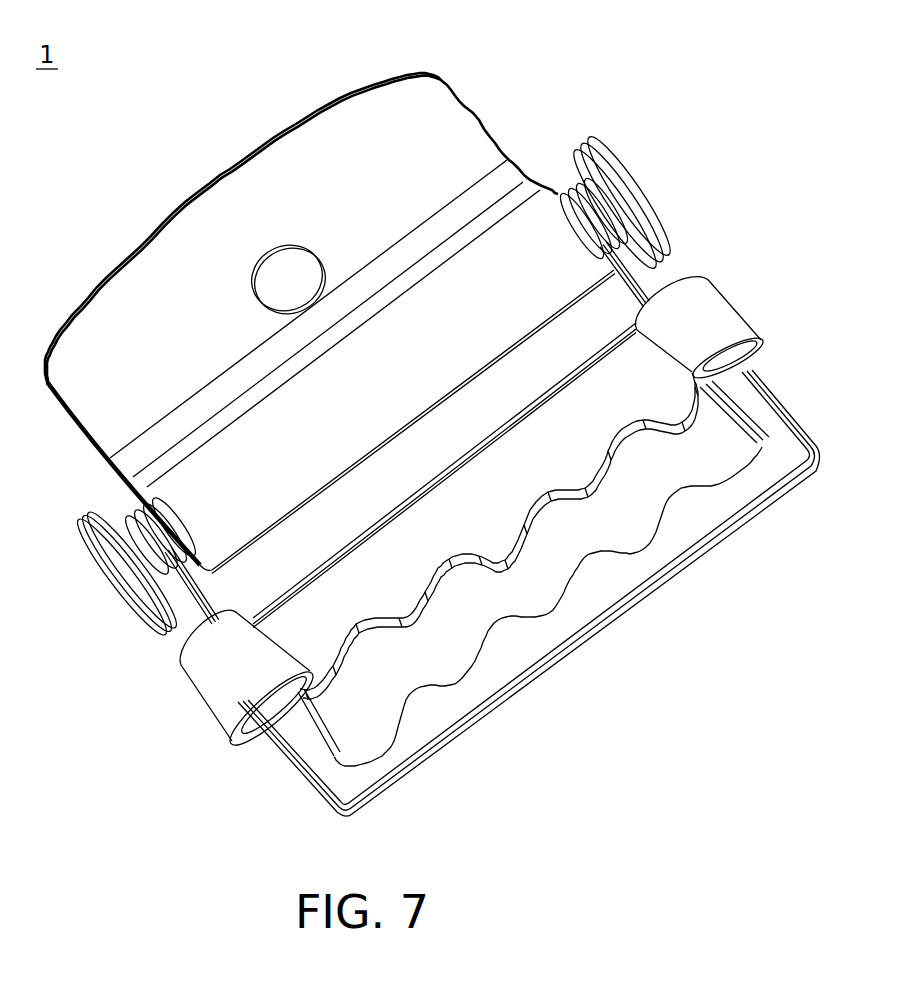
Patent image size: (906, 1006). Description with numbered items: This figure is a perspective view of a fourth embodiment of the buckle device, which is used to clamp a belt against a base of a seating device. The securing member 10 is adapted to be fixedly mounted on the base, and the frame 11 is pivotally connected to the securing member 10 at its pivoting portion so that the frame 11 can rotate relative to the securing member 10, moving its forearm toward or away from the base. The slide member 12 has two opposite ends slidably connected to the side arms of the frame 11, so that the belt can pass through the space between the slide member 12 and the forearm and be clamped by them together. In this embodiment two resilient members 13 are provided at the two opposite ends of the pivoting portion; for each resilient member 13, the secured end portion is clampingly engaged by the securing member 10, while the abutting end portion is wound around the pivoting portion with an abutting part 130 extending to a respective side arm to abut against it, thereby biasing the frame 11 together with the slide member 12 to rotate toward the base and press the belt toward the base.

The securing member 10 is at (299, 148).
The frame 11 is at (498, 749).
The slide member 12 is at (217, 690).
The resilient member 13 is at (130, 515).
The abutting part 130 is at (660, 277).